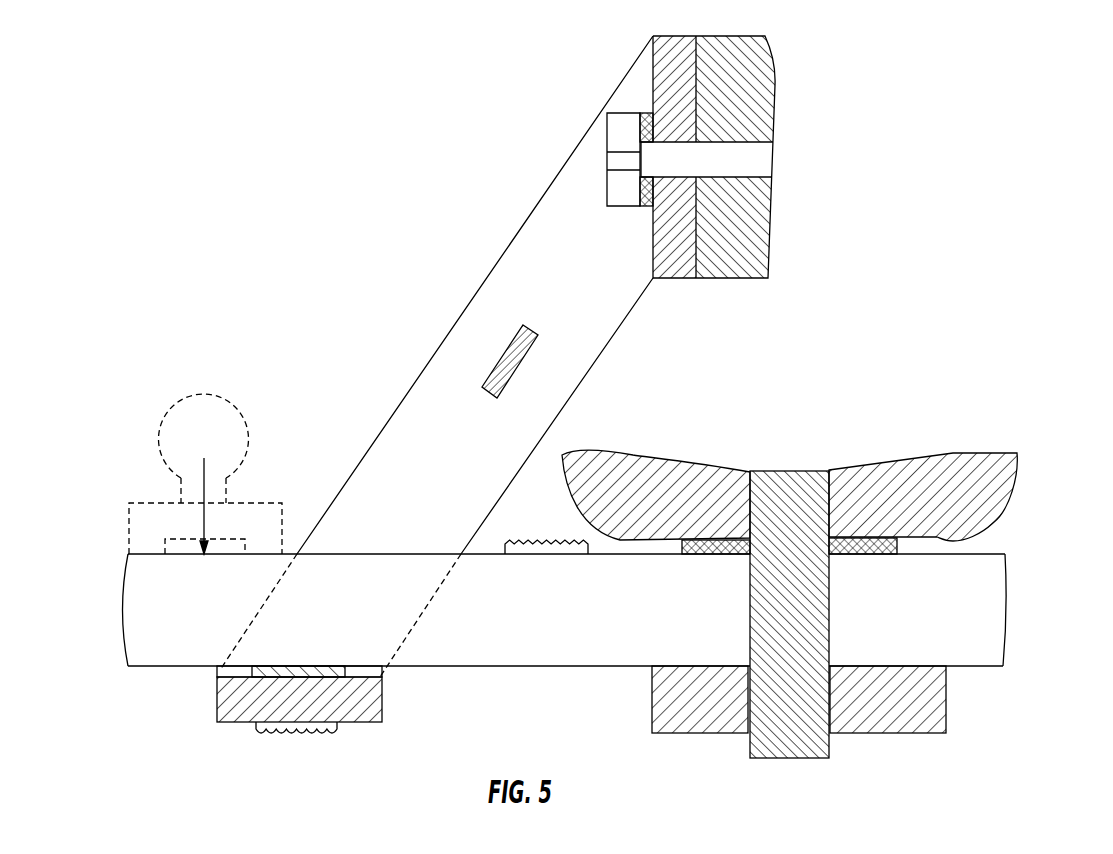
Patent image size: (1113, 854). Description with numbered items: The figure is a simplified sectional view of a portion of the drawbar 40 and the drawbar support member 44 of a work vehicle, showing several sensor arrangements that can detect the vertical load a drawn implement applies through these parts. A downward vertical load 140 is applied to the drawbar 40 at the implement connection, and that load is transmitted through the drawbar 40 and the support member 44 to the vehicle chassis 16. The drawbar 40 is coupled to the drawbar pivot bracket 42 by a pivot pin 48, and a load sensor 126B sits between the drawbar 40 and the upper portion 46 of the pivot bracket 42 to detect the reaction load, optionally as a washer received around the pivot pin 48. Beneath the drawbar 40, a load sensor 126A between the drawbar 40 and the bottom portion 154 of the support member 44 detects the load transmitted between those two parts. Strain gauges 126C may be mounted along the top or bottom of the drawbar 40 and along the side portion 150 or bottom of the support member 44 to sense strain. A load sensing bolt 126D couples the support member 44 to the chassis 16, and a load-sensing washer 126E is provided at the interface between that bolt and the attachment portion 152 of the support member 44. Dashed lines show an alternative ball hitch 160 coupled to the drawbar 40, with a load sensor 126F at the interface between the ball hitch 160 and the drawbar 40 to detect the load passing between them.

The vehicle chassis 16 is at (759, 88).
The drawbar 40 is at (462, 618).
The drawbar pivot bracket 42 is at (954, 454).
The drawbar support member 44 is at (384, 689).
The upper portion of the pivot bracket 46 is at (980, 502).
The pivot pin 48 is at (765, 760).
The downward vertical load 140 is at (203, 495).
The side portion of the support member 150 is at (533, 238).
The attachment portion of the drawbar support member 152 is at (663, 268).
The bottom portion of the drawbar support member 154 is at (365, 715).
The ball hitch 160 is at (178, 398).
The load sensor 126A is at (248, 668).
The load sensor 126B is at (678, 540).
The strain gauge 126C is at (487, 370).
The load sensing bolt 126D is at (616, 162).
The load sensor 126E is at (650, 112).
The load sensor 126F is at (190, 535).